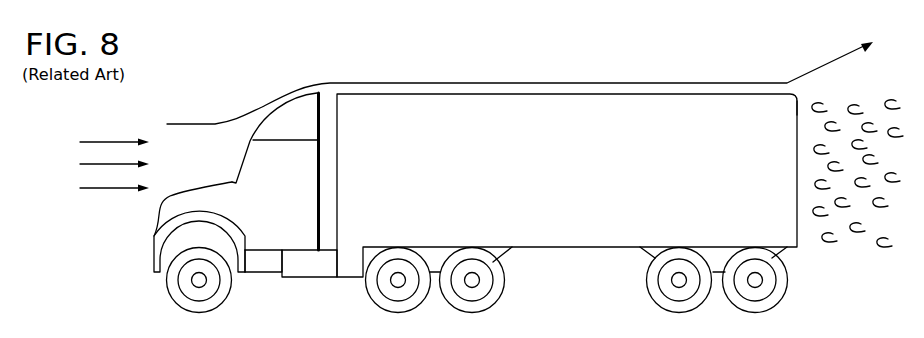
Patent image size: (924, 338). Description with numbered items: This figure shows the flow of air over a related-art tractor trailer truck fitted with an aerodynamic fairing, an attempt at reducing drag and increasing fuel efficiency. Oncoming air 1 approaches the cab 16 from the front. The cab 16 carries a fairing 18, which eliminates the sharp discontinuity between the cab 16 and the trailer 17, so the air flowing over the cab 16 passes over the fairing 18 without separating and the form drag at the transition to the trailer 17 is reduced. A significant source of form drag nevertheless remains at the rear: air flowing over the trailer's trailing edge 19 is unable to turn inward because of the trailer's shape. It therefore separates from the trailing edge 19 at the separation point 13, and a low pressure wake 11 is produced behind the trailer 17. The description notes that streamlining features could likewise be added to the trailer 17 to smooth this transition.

The air flow 1 is at (103, 189).
The fairing 18 is at (271, 128).
The cab 16 is at (293, 237).
The trailer 17 is at (587, 226).
The separation point 13 is at (785, 83).
The trailing edge 19 is at (803, 92).
The low pressure wake 11 is at (857, 233).